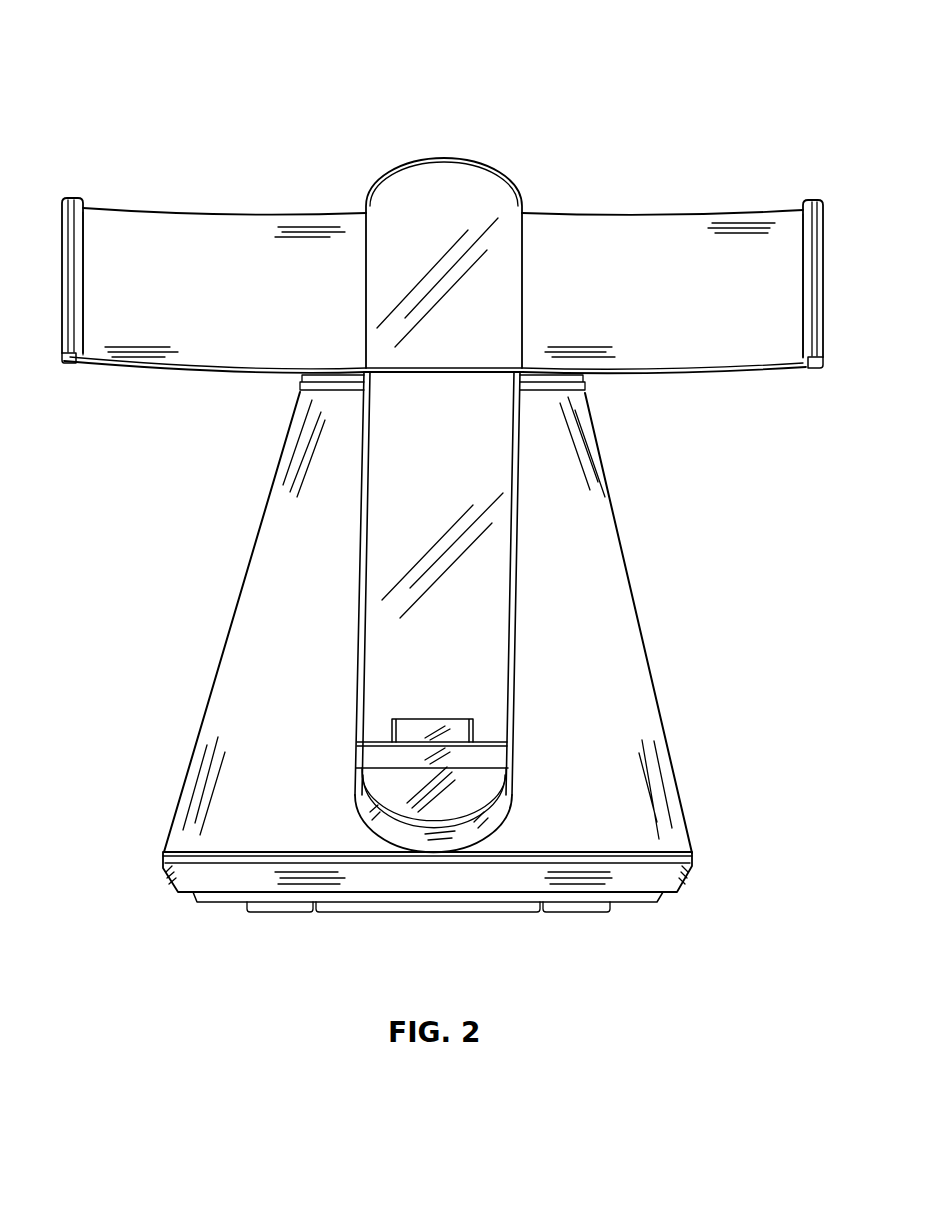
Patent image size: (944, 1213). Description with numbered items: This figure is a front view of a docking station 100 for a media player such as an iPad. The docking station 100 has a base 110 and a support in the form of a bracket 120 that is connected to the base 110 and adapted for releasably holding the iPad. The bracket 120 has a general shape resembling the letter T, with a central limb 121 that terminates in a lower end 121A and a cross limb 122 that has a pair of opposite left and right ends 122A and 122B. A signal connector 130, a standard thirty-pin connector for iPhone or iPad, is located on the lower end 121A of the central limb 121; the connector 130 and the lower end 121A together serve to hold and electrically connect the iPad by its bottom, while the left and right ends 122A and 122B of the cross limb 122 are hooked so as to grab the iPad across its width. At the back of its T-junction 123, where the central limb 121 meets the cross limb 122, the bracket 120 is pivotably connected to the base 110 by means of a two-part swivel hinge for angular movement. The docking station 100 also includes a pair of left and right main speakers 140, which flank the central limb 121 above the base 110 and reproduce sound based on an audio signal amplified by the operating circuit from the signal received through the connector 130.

The docking station 100 is at (272, 78).
The base 110 is at (677, 893).
The bracket 120 is at (718, 373).
The central limb 121 is at (382, 533).
The lower end 121A is at (467, 790).
The cross limb 122 is at (250, 227).
The left end 122A is at (77, 200).
The right end 122B is at (810, 200).
The T-junction 123 is at (420, 188).
The signal connector 130 is at (450, 725).
The main speakers 140 is at (228, 693).